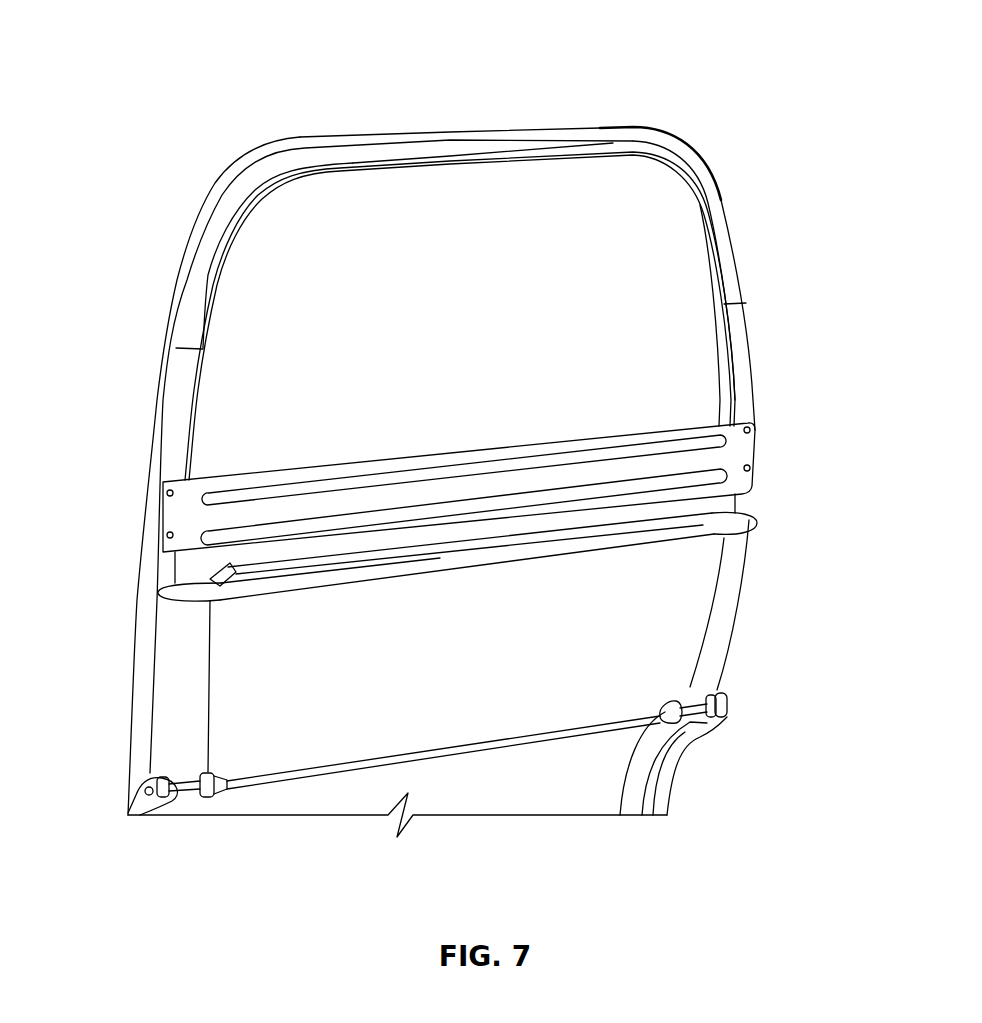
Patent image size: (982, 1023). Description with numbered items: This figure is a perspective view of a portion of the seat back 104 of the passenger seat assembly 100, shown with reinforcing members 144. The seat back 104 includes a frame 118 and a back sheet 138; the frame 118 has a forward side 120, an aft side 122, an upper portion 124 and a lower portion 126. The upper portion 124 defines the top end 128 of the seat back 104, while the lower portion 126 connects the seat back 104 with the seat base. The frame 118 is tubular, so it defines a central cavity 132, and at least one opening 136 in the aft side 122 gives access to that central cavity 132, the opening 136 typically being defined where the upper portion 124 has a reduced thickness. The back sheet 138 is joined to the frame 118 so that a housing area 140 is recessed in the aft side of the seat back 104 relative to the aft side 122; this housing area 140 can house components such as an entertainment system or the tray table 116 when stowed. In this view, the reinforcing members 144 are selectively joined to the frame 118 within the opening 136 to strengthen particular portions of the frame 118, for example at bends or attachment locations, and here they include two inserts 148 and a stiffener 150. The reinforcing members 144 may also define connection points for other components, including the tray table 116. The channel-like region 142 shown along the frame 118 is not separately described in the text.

The passenger seat assembly 100 is at (793, 37).
The seat back 104 is at (488, 176).
The tray table 116 is at (742, 572).
The frame 118 is at (207, 200).
The forward side 120 is at (131, 714).
The aft side 122 is at (682, 146).
The upper portion 124 is at (725, 218).
The lower portion 126 is at (136, 640).
The top end 128 is at (335, 133).
The central cavity 132 is at (637, 127).
The opening 136 is at (247, 175).
The back sheet 138 is at (393, 187).
The housing area 140 is at (436, 174).
The channel 142 is at (230, 280).
The reinforcing members 144 is at (176, 366).
The inserts 148 is at (156, 405).
The stiffener 150 is at (187, 518).